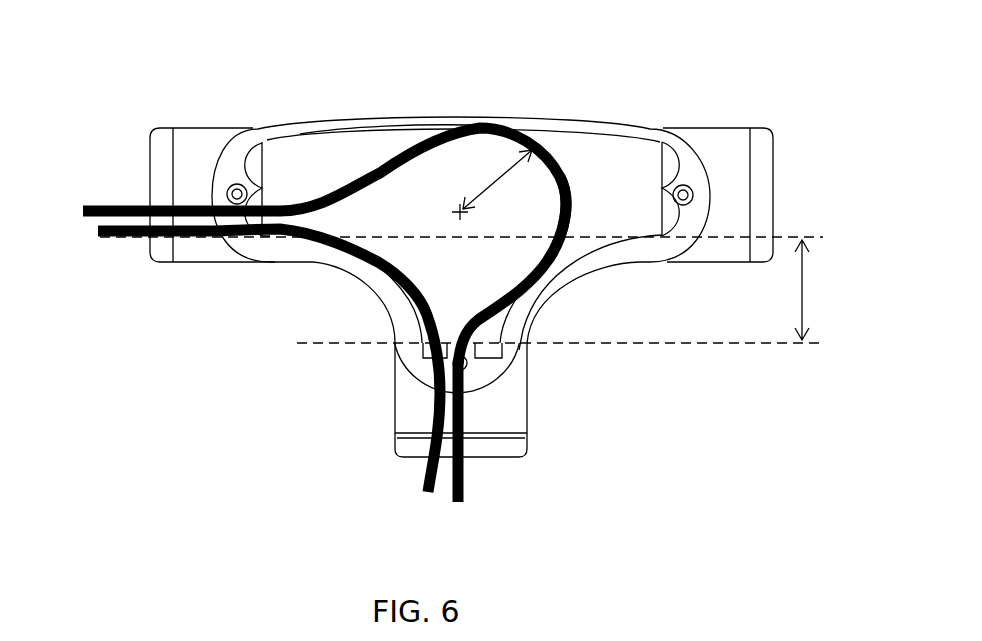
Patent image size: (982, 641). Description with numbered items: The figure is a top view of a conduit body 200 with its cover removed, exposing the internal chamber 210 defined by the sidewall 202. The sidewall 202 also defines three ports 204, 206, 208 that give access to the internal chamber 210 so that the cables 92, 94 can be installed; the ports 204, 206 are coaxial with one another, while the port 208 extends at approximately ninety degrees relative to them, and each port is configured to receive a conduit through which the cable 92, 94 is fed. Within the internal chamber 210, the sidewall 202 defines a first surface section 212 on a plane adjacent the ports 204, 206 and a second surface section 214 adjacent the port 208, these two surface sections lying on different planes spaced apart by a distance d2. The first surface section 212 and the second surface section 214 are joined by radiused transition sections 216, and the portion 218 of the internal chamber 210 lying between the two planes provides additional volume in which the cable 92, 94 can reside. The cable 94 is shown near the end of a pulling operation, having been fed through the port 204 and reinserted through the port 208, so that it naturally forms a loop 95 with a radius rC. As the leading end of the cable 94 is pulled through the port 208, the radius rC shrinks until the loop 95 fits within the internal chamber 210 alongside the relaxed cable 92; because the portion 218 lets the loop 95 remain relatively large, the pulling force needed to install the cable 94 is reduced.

The conduit body 200 is at (337, 83).
The sidewall 202 is at (563, 127).
The port 204 is at (168, 130).
The port 206 is at (738, 128).
The port 208 is at (523, 455).
The internal chamber 210 is at (348, 152).
The first surface section 212 is at (275, 238).
The second surface section 214 is at (490, 343).
The radiused transition sections 216 is at (348, 270).
The portion of the internal chamber 218 is at (453, 287).
The cable 92 is at (383, 263).
The cable 94 is at (330, 190).
The loop 95 is at (567, 188).
The radius of the loop rC is at (492, 185).
The distance d2 is at (568, 291).